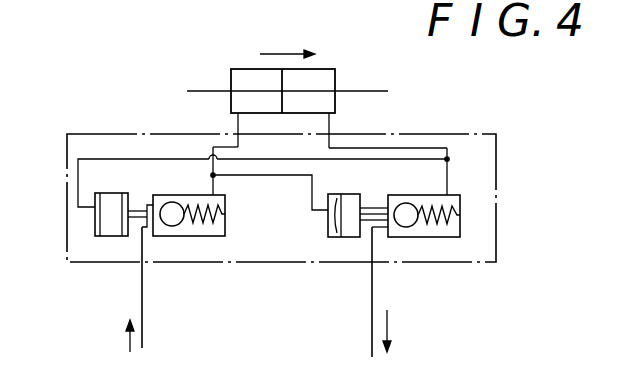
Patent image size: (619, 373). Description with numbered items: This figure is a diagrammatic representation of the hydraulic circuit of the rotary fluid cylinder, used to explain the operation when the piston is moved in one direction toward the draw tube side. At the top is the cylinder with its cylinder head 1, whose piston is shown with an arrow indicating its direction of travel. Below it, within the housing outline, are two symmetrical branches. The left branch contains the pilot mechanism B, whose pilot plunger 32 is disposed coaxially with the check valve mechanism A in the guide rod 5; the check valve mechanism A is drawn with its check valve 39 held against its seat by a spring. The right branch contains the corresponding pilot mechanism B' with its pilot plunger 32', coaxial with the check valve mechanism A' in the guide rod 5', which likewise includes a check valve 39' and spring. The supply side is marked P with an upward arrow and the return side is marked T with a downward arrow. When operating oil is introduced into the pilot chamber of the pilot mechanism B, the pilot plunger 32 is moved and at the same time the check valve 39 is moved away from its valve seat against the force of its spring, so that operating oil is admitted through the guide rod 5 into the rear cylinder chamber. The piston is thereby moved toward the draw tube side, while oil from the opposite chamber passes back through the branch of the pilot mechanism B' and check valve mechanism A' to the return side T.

The cylinder head 1 is at (328, 73).
The check valve mechanism A is at (219, 207).
The check valve mechanism A' is at (465, 207).
The pilot mechanism B is at (82, 252).
The pilot mechanism B' is at (330, 270).
The pilot plunger 32 is at (111, 249).
The pilot plunger 32' is at (352, 250).
The check valve 39 is at (173, 253).
The check ball 39' is at (414, 255).
The guide rod 5 is at (204, 255).
The guide rod 5' is at (449, 256).
The pump port P is at (149, 292).
The tank port T is at (396, 292).